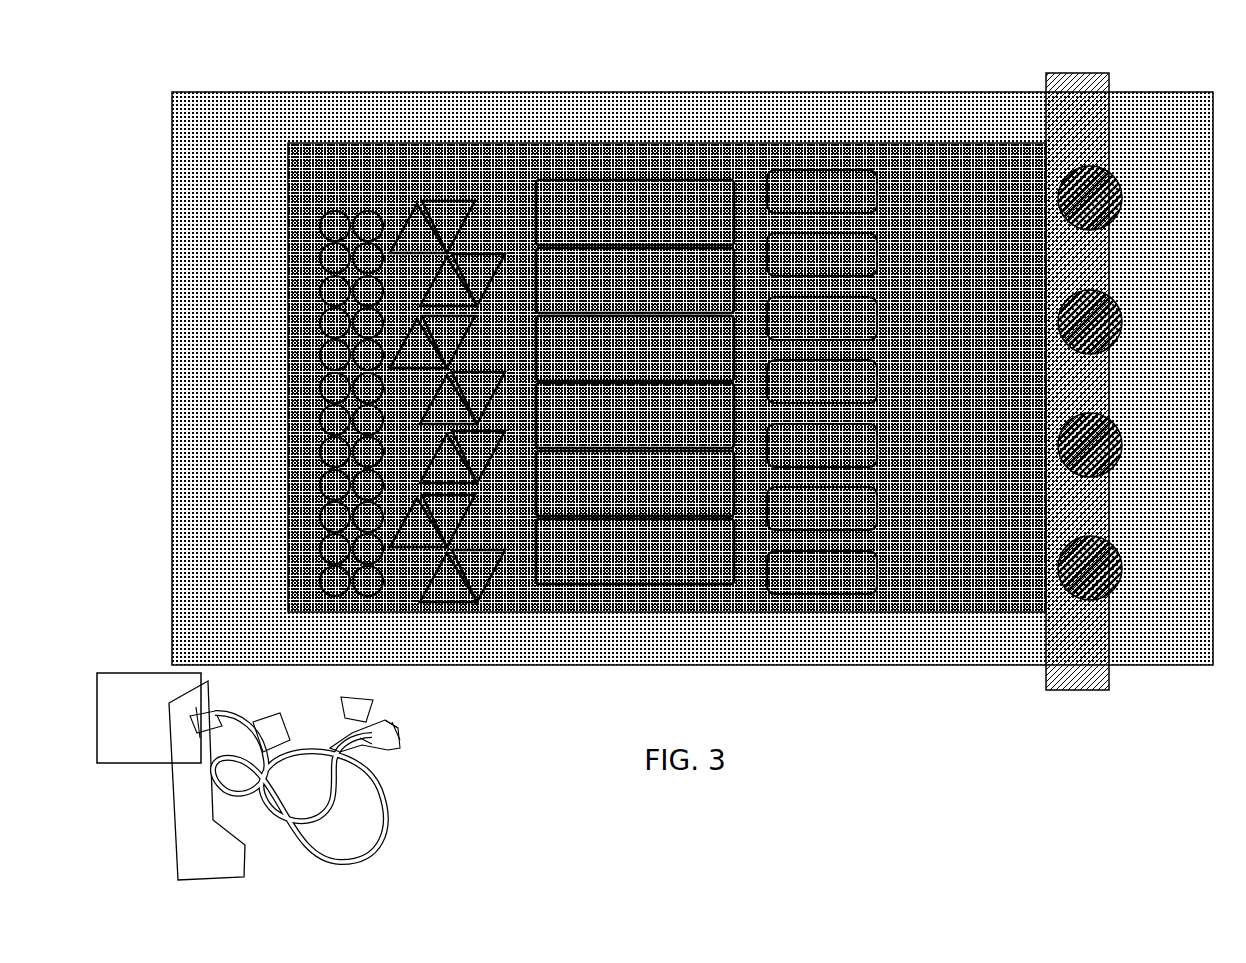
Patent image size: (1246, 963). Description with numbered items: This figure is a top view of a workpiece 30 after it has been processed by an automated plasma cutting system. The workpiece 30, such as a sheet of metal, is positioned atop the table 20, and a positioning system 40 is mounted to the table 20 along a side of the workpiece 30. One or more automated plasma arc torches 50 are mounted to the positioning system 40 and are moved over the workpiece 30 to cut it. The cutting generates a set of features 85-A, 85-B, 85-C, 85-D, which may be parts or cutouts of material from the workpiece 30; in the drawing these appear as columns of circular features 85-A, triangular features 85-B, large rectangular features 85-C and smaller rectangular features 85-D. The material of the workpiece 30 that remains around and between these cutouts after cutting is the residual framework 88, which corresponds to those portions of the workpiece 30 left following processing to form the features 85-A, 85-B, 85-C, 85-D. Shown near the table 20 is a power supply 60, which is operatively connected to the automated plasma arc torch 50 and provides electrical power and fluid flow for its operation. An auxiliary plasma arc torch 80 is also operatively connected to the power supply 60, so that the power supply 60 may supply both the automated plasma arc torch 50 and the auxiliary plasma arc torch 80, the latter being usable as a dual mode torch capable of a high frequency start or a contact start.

The table 20 is at (957, 104).
The workpiece 30 is at (508, 148).
The positioning system 40 is at (1083, 80).
The automated plasma arc torch 50 is at (1088, 207).
The power supply 60 is at (171, 776).
The auxiliary plasma arc torch 80 is at (362, 740).
The feature 85-A is at (347, 195).
The feature 85-B is at (441, 178).
The feature 85-C is at (637, 167).
The feature 85-D is at (824, 160).
The residual framework 88 is at (913, 230).